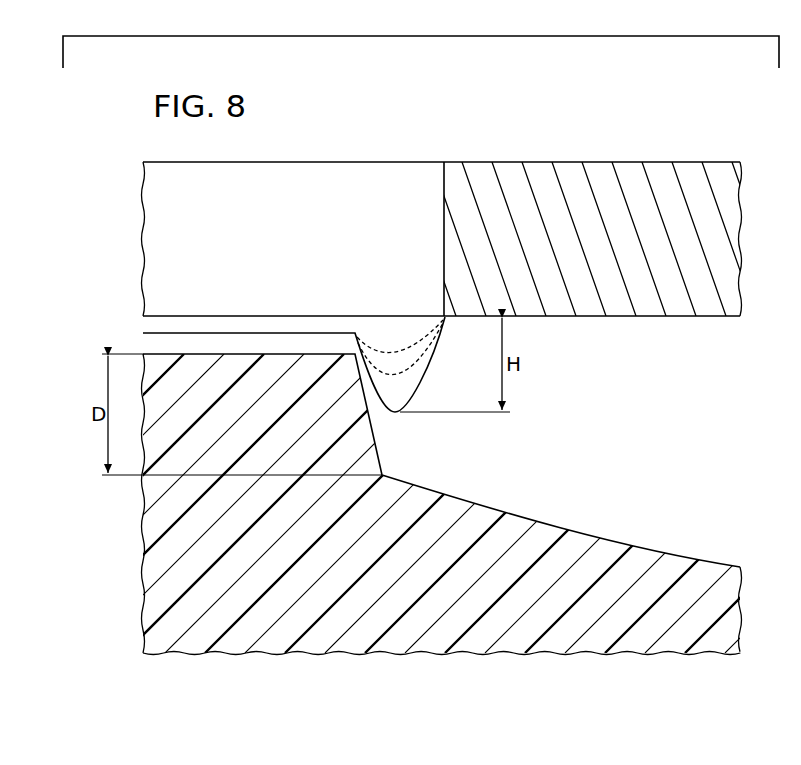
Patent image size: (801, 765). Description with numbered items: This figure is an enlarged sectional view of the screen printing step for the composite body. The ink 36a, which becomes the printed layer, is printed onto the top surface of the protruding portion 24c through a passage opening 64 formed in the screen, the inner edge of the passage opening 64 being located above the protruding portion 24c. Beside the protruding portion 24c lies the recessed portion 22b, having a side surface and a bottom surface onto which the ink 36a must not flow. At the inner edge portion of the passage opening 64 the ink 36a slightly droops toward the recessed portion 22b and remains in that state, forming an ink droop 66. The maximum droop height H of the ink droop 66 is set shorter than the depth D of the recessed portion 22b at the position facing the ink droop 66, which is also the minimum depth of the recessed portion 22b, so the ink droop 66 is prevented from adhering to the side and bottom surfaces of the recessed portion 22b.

The passage opening 64 is at (443, 187).
The ink 36a is at (276, 332).
The ink droop 66 is at (413, 377).
The protruding portion 24c is at (357, 440).
The recessed portion 22b is at (608, 538).